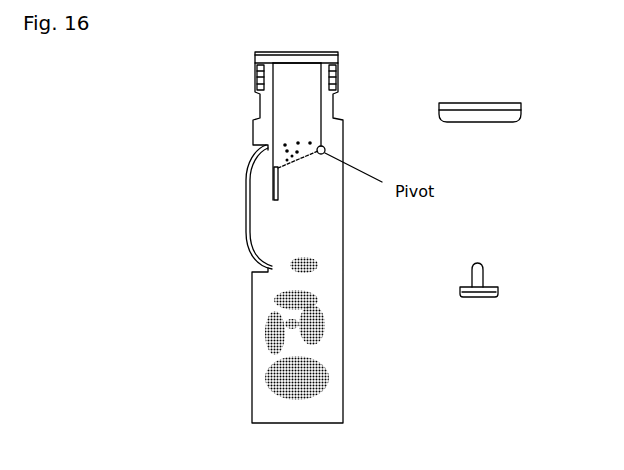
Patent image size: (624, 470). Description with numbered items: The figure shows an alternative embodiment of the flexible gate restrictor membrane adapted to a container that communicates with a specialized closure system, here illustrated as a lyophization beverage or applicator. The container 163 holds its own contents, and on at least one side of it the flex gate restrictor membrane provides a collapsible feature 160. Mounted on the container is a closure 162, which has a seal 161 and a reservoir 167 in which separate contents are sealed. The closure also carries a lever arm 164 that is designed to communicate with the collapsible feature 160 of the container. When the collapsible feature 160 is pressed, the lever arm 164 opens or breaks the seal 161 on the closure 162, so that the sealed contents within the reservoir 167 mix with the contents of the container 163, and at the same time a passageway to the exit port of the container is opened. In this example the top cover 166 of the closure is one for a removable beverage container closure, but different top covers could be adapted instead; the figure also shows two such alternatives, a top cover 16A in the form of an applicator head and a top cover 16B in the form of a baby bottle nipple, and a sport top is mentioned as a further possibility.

The collapsible feature 160 is at (237, 178).
The seal 161 is at (272, 168).
The closure 162 is at (338, 58).
The container 163 is at (267, 343).
The lever arm 164 is at (270, 188).
The top cover 166 is at (255, 52).
The reservoir 167 is at (288, 92).
The top cover 16A is at (500, 98).
The top cover 16B is at (505, 280).